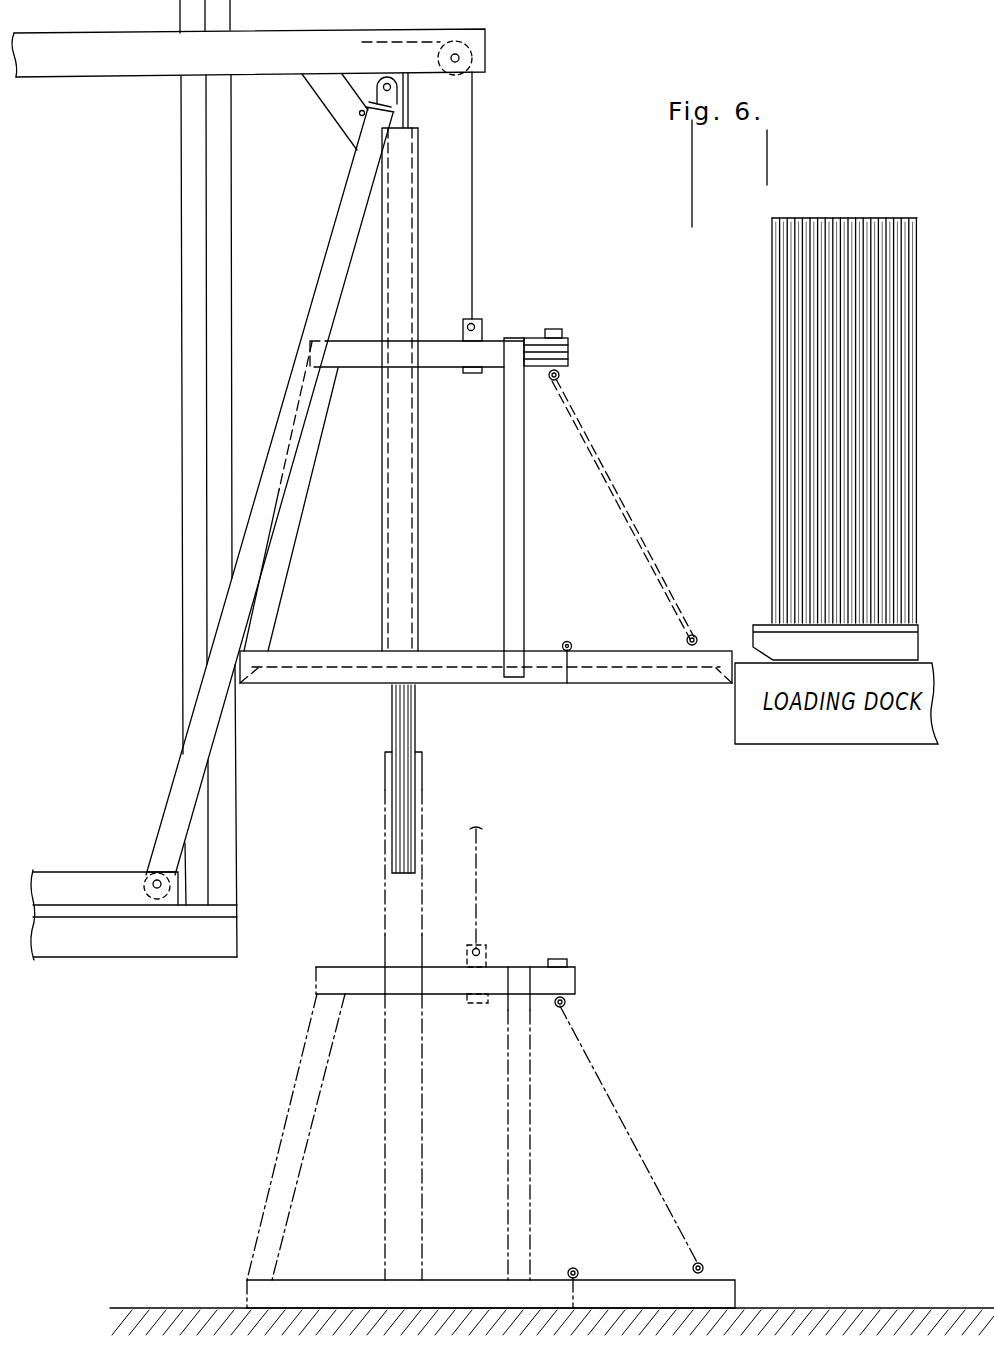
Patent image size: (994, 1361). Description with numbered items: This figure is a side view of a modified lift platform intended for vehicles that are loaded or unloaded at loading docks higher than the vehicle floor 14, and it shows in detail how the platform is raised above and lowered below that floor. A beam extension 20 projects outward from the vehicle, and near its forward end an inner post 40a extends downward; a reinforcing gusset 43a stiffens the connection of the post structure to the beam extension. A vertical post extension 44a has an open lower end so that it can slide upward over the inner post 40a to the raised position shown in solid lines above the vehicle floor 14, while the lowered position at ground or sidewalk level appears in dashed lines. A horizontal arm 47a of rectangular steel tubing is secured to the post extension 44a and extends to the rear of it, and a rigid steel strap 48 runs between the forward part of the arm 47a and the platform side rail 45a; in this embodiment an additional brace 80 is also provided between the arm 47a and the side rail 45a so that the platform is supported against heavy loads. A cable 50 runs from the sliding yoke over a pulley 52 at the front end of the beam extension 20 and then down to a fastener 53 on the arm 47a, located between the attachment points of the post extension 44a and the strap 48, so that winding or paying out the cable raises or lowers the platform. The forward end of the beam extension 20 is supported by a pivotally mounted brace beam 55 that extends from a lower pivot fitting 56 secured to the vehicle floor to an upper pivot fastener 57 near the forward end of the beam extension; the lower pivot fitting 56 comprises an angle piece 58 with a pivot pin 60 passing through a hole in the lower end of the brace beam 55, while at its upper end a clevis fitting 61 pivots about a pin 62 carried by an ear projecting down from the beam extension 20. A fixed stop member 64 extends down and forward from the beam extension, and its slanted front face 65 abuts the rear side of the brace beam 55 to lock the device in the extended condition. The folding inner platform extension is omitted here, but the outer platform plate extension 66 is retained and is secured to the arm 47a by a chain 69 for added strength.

The floor 14 is at (122, 948).
The beam extension 20 is at (140, 76).
The inner post 40a is at (409, 121).
The reinforcing gusset 43a is at (363, 966).
The vertical post extension 44a is at (419, 251).
The platform side rail 45a is at (487, 652).
The horizontal arm 47a is at (434, 340).
The reinforcing strap 48 is at (505, 565).
The cable 50 is at (474, 163).
The pulley 52 is at (470, 50).
The fastener 53 is at (483, 325).
The brace beam 55 is at (321, 268).
The lower pivot fitting 56 is at (143, 857).
The upper pivot fastener 57 is at (353, 123).
The angle piece 58 is at (86, 872).
The pivot pin 60 is at (154, 881).
The clevis fitting 61 is at (378, 90).
The pin 62 is at (398, 90).
The fixed stop member 64 is at (353, 117).
The slanted front face 65 is at (357, 146).
The outside platform plate extension 66 is at (632, 650).
The chain 69 is at (652, 562).
The brace 80 is at (292, 543).